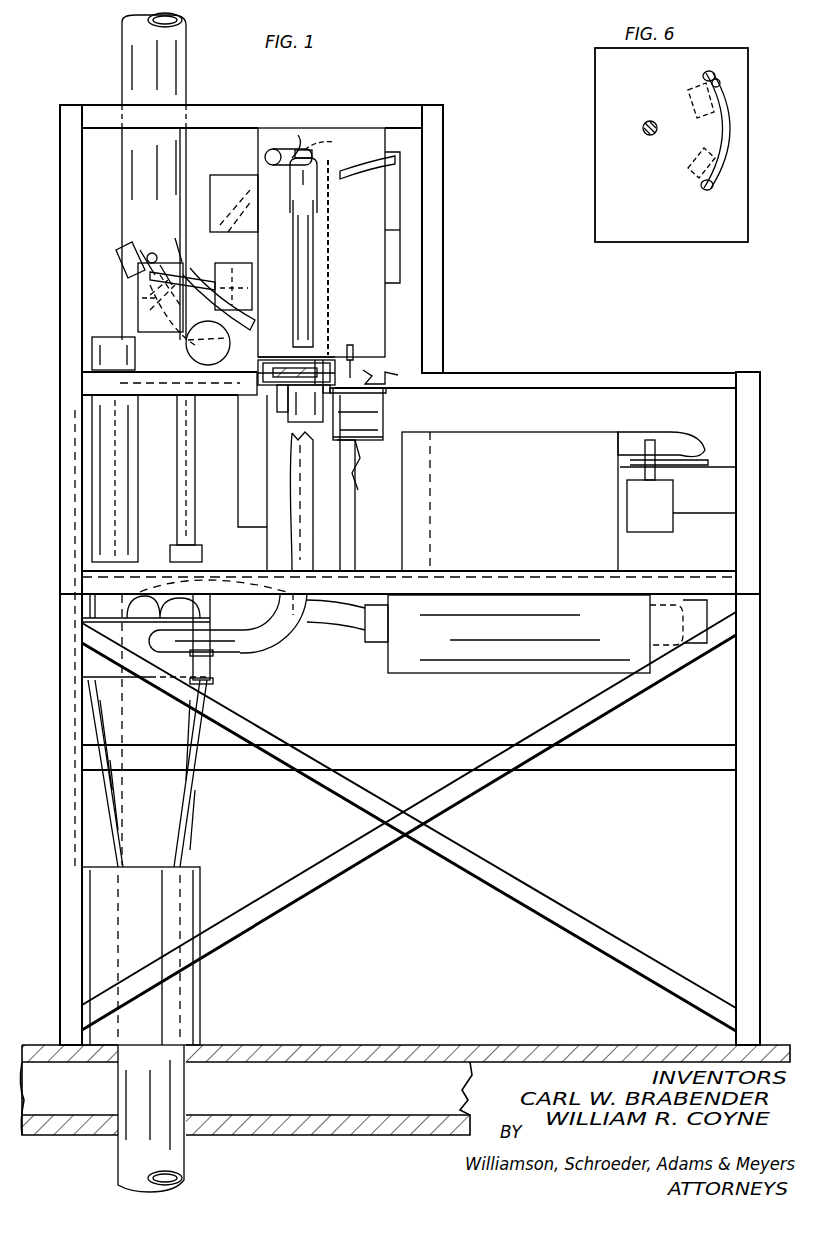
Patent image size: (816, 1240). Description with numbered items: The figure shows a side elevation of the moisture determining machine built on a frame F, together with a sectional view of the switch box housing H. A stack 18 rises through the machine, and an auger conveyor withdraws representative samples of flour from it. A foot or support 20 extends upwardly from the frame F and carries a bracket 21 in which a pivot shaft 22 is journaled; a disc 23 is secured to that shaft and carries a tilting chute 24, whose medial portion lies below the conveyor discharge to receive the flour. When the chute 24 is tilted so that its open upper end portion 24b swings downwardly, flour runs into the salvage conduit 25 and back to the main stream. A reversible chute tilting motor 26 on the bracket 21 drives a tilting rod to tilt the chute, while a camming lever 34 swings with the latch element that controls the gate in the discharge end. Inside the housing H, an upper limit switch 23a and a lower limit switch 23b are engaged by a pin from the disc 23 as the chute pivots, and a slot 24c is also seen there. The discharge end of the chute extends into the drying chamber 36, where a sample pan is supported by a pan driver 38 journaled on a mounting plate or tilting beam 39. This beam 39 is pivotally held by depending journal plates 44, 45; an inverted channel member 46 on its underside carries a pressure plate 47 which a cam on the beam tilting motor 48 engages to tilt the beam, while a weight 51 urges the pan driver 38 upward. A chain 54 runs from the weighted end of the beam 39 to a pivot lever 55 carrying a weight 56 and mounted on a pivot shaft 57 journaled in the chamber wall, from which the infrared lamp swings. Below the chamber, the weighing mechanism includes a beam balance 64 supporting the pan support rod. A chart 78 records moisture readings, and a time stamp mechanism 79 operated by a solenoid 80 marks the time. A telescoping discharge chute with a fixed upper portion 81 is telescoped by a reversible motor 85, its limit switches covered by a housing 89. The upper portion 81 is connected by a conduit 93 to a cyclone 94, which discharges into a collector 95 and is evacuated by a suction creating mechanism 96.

In FIG. 1, the stack 18 is at (128, 60).
In FIG. 1, the foot or support 20 is at (178, 482).
In FIG. 1, the bracket 21 is at (125, 338).
In FIG. 1, the pivot shaft 22 is at (138, 294).
In FIG. 1, the disc 23 is at (160, 252).
In FIG. 1, the tilting chute 24 is at (130, 252).
In FIG. 1, the upper end portion of the chute 24b is at (118, 258).
In FIG. 1, the salvage conduit 25 is at (125, 530).
In FIG. 1, the chute tilting motor 26 is at (208, 343).
In FIG. 1, the camming lever 34 is at (195, 270).
In FIG. 1, the drying chamber 36 is at (365, 315).
In FIG. 1, the pan driver 38 is at (292, 362).
In FIG. 1, the mounting plate or tilting beam 39 is at (276, 400).
In FIG. 1, the journal plate 44 is at (352, 362).
In FIG. 1, the journal plate 45 is at (258, 380).
In FIG. 1, the inverted channel member 46 is at (330, 400).
In FIG. 1, the pressure plate 47 is at (287, 418).
In FIG. 1, the beam tilting motor 48 is at (360, 445).
In FIG. 1, the weight 51 is at (312, 445).
In FIG. 1, the chain 54 is at (335, 252).
In FIG. 1, the pivot lever 55 is at (284, 136).
In FIG. 1, the weight 56 is at (265, 155).
In FIG. 1, the pivot shaft 57 is at (333, 141).
In FIG. 1, the beam balance 64 is at (410, 418).
In FIG. 1, the chart 78 is at (678, 490).
In FIG. 1, the time stamp mechanism 79 is at (665, 445).
In FIG. 1, the solenoid 80 is at (650, 486).
In FIG. 1, the fixed upper portion of discharge chute 81 is at (292, 185).
In FIG. 1, the reversible motor 85 is at (250, 282).
In FIG. 1, the housing 89 is at (392, 200).
In FIG. 1, the conduit 93 is at (298, 256).
In FIG. 1, the cyclone 94 is at (170, 715).
In FIG. 1, the collector 95 is at (200, 880).
In FIG. 1, the suction creating mechanism 96 is at (536, 634).
In FIG. 1, the frame F is at (530, 366).
In FIG. 6, the switch box housing H is at (605, 122).
In FIG. 6, the upper limit switch 23a is at (688, 165).
In FIG. 6, the lower limit switch 23b is at (688, 100).
In FIG. 6, the slot 24c is at (718, 83).